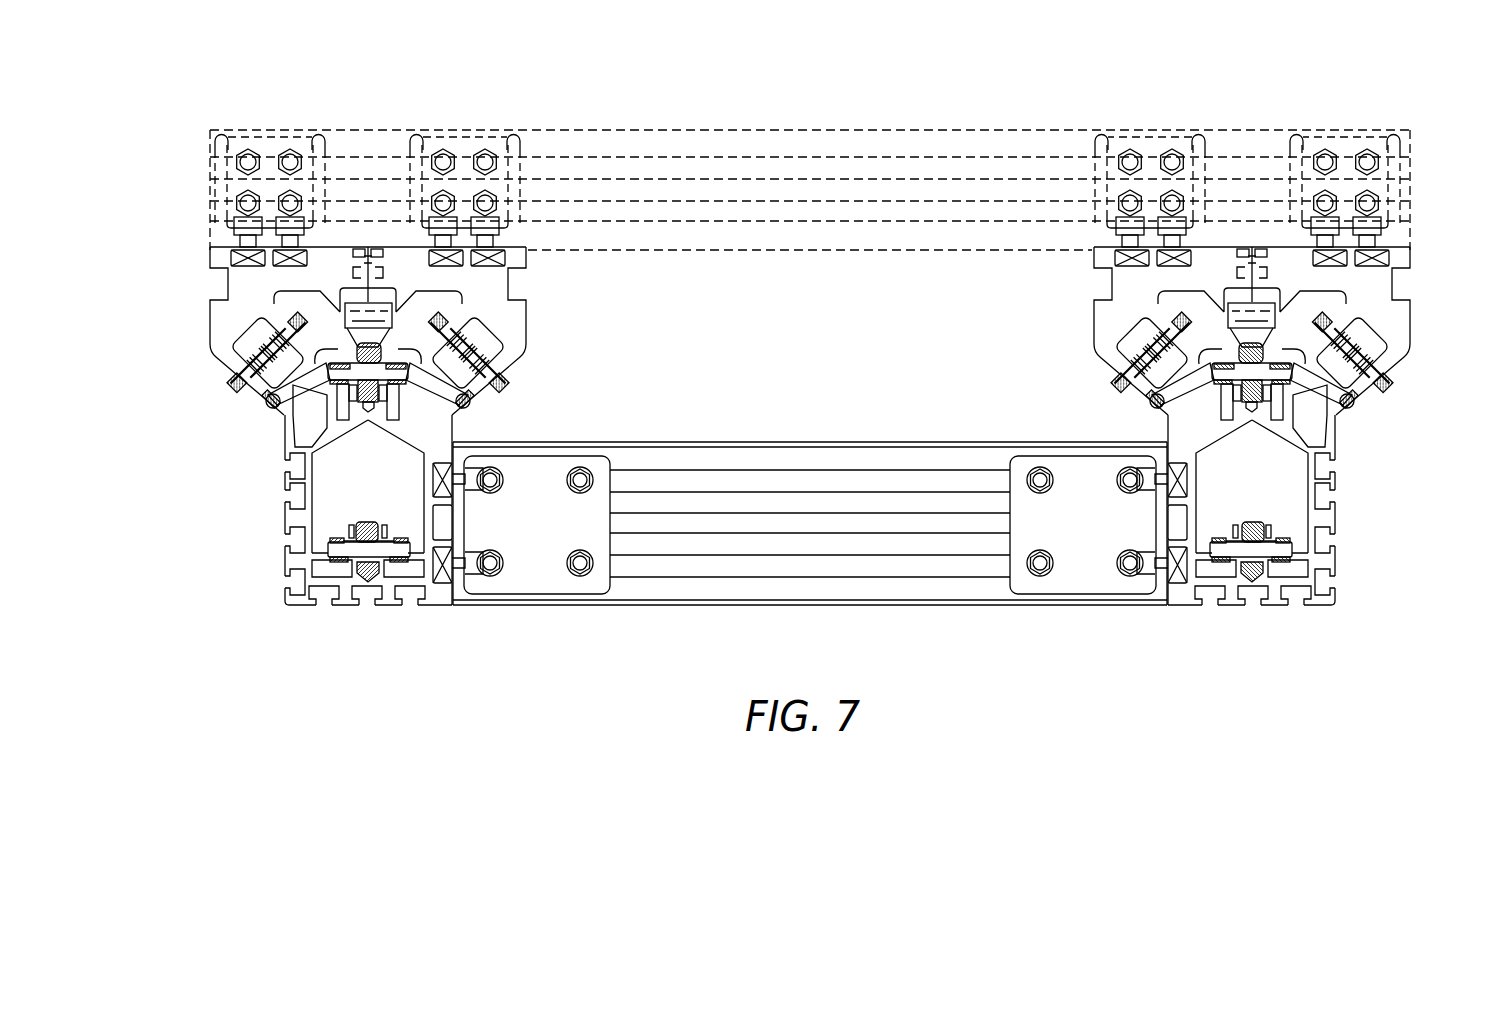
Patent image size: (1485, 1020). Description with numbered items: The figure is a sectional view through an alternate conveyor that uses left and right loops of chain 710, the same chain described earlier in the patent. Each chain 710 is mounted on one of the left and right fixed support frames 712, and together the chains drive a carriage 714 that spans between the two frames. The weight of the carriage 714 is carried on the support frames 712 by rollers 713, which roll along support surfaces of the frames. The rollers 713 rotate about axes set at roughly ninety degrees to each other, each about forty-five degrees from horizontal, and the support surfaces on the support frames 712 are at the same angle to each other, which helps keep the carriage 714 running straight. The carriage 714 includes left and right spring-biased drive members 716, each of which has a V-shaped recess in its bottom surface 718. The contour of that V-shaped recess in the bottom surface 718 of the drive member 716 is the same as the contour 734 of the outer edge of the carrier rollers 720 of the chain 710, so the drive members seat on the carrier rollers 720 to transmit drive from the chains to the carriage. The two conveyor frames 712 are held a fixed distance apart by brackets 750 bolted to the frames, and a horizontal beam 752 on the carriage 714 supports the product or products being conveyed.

The horizontal beam 752 is at (828, 145).
The brackets 750 is at (748, 451).
The carriage 714 is at (1406, 324).
The fixed support frames 712 is at (1334, 453).
The rollers 713 is at (1120, 343).
The chain 710 is at (1249, 516).
The spring-biased drive members 716 is at (1223, 314).
The bottom surface 718 is at (386, 347).
The carrier rollers 720 is at (1247, 586).
The contour 734 is at (370, 523).